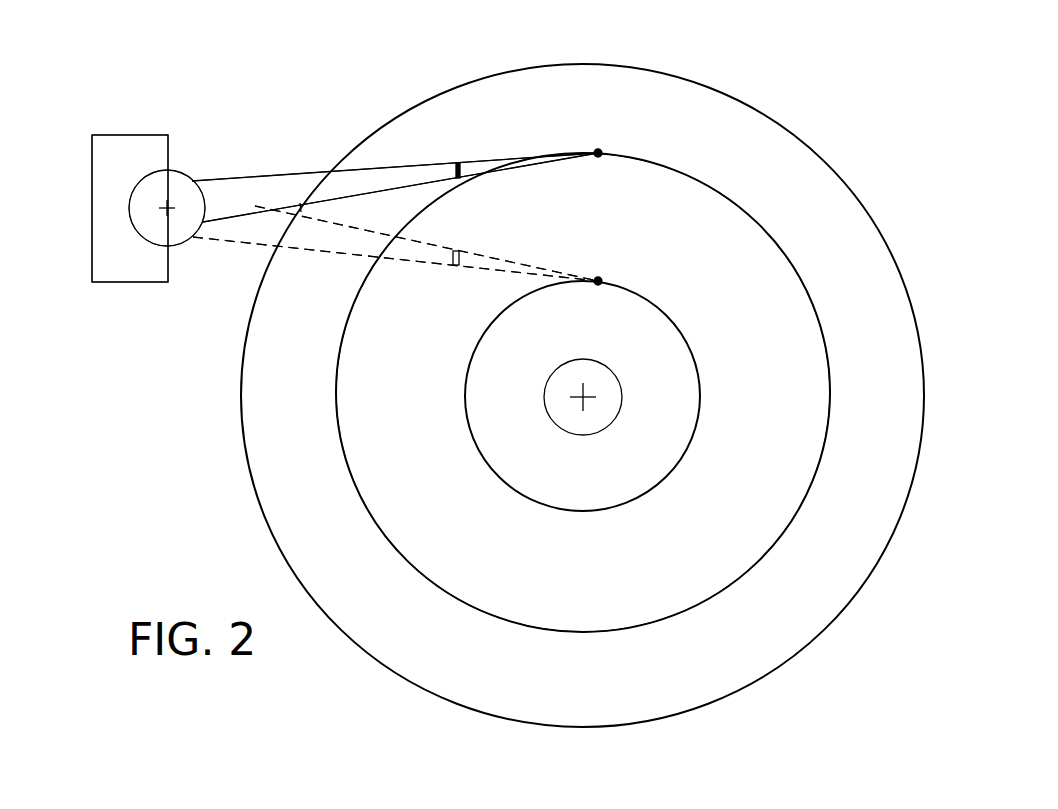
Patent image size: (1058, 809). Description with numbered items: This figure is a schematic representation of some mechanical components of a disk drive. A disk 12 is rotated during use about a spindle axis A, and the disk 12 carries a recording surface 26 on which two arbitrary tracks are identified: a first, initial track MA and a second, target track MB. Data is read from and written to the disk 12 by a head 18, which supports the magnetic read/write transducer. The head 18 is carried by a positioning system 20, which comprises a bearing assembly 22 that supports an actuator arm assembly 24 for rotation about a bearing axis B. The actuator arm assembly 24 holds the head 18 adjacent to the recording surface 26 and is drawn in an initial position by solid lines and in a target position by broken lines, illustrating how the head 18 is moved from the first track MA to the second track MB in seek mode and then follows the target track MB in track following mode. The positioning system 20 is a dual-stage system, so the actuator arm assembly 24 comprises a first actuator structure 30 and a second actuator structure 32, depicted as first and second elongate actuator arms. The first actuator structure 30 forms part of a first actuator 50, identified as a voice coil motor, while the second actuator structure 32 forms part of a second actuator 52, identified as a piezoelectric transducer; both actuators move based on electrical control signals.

The disk 12 is at (683, 75).
The head 18 is at (599, 153).
The positioning system 20 is at (176, 74).
The bearing assembly 22 is at (118, 118).
The actuator arm assembly 24 is at (321, 160).
The recording surface 26 is at (868, 297).
The first actuator structure 30 is at (375, 178).
The second actuator structure 32 is at (510, 160).
The first actuator 50 is at (110, 268).
The second actuator 52 is at (456, 165).
The spindle axis A is at (583, 397).
The bearing axis B is at (170, 205).
The first track MA is at (828, 362).
The second track MB is at (668, 478).